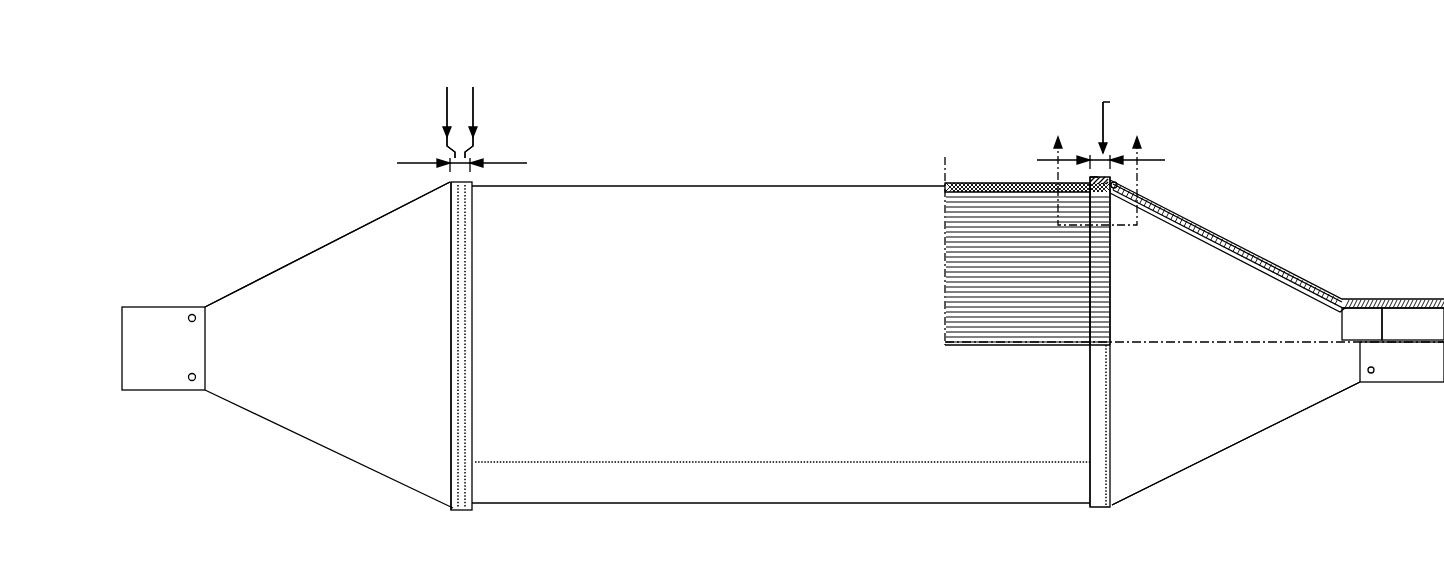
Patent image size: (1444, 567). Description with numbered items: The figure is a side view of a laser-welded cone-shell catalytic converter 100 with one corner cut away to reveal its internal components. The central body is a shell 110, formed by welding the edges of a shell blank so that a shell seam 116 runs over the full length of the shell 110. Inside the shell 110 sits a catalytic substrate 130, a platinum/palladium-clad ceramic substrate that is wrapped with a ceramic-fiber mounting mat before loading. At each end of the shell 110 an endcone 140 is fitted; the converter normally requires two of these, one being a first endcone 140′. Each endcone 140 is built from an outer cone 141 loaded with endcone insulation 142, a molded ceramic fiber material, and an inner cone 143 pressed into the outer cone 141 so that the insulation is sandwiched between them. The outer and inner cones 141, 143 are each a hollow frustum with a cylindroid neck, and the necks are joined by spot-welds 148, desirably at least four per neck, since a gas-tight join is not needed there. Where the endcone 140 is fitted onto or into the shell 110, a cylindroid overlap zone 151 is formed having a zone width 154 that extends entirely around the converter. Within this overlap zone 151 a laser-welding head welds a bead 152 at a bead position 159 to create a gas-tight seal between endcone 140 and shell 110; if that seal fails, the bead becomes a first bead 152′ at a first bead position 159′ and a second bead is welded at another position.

The catalytic converter 100 is at (1394, 532).
The shell 110 is at (770, 213).
The shell seam 116 is at (955, 461).
The catalytic substrate 130 is at (967, 207).
The endcone 140 is at (332, 258).
The first endcone 140′ is at (1180, 458).
The outer cone 141 is at (1243, 245).
The endcone insulation 142 is at (1292, 270).
The inner cone 143 is at (1318, 315).
The spot-welds 148 is at (189, 318).
The overlap zone 151 is at (468, 155).
The bead 152 is at (453, 488).
The first bead 152′ is at (458, 490).
The zone width 154 is at (420, 164).
The bead position 159 is at (445, 108).
The first bead position 159′ is at (477, 112).